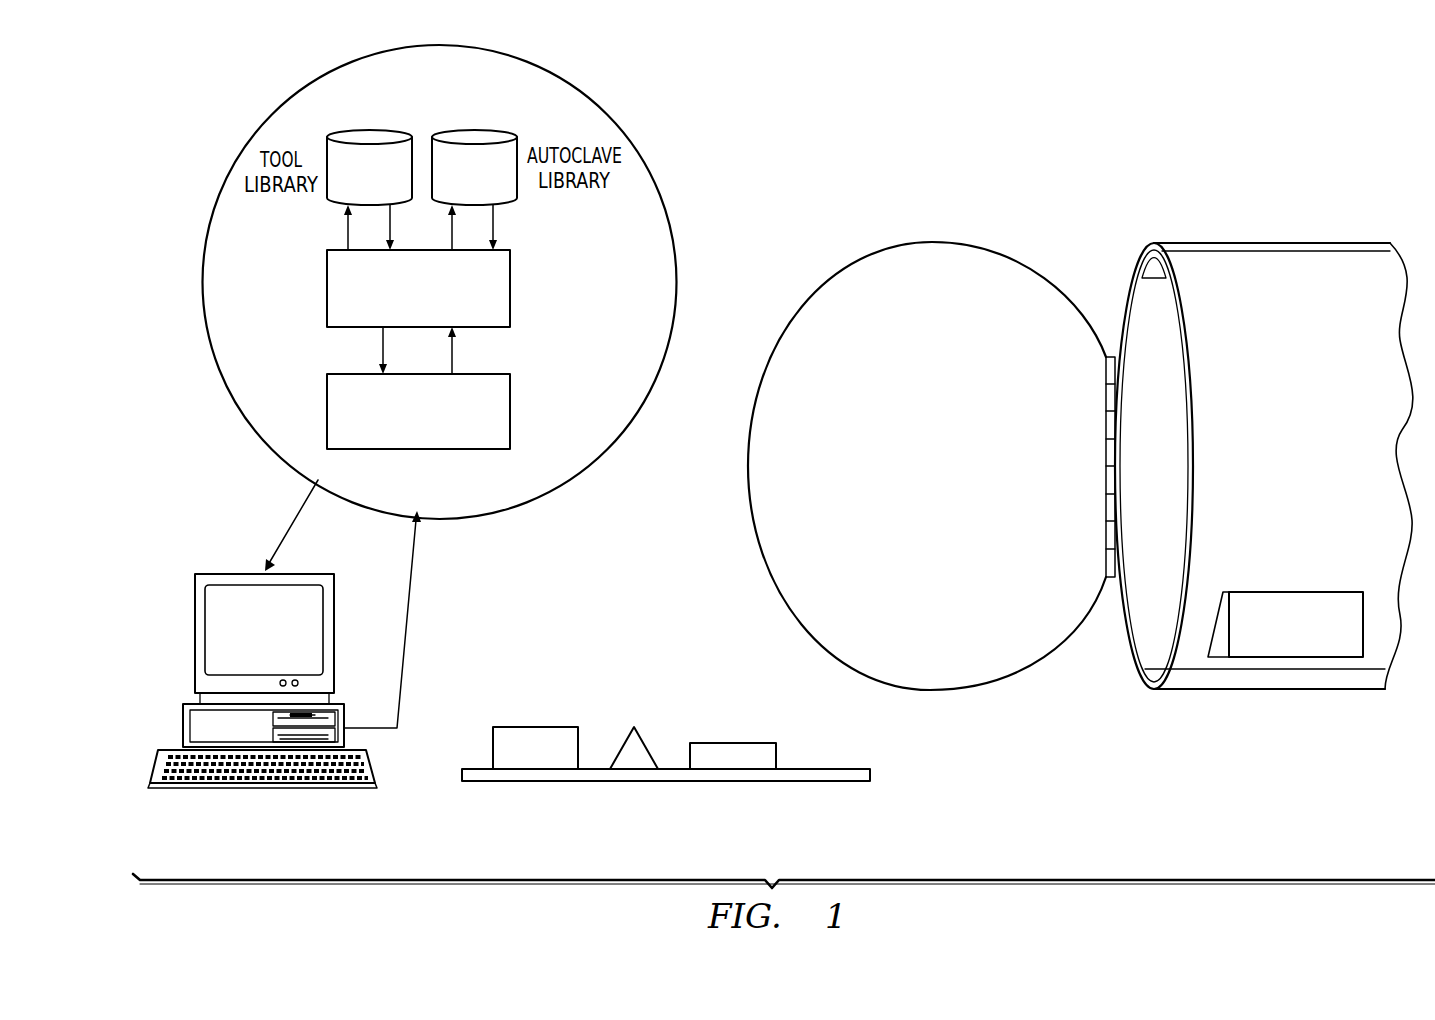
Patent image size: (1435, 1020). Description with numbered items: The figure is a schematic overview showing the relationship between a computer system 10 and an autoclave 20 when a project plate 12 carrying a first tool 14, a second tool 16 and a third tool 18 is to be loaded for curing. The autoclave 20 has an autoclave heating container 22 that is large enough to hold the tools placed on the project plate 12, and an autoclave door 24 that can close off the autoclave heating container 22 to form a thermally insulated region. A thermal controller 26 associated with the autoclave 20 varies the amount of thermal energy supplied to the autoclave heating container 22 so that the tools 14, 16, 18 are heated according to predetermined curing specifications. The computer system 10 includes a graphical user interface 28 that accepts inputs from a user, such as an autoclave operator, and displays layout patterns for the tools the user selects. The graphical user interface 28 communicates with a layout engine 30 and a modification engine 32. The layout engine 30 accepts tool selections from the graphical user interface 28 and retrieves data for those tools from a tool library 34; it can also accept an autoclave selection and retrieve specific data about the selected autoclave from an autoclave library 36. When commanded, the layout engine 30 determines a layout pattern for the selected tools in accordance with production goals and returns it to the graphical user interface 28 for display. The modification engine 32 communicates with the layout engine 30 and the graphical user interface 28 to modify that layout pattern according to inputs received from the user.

The computer system 10 is at (258, 721).
The project plate 12 is at (646, 807).
The first tool 14 is at (537, 727).
The second tool 16 is at (626, 740).
The third tool 18 is at (732, 743).
The autoclave 20 is at (1080, 431).
The autoclave heating container 22 is at (1311, 459).
The autoclave door 24 is at (940, 242).
The thermal controller 26 is at (1297, 592).
The graphical user interface 28 is at (224, 628).
The layout engine 30 is at (327, 288).
The modification engine 32 is at (327, 407).
The tool library 34 is at (383, 183).
The autoclave library 36 is at (488, 183).